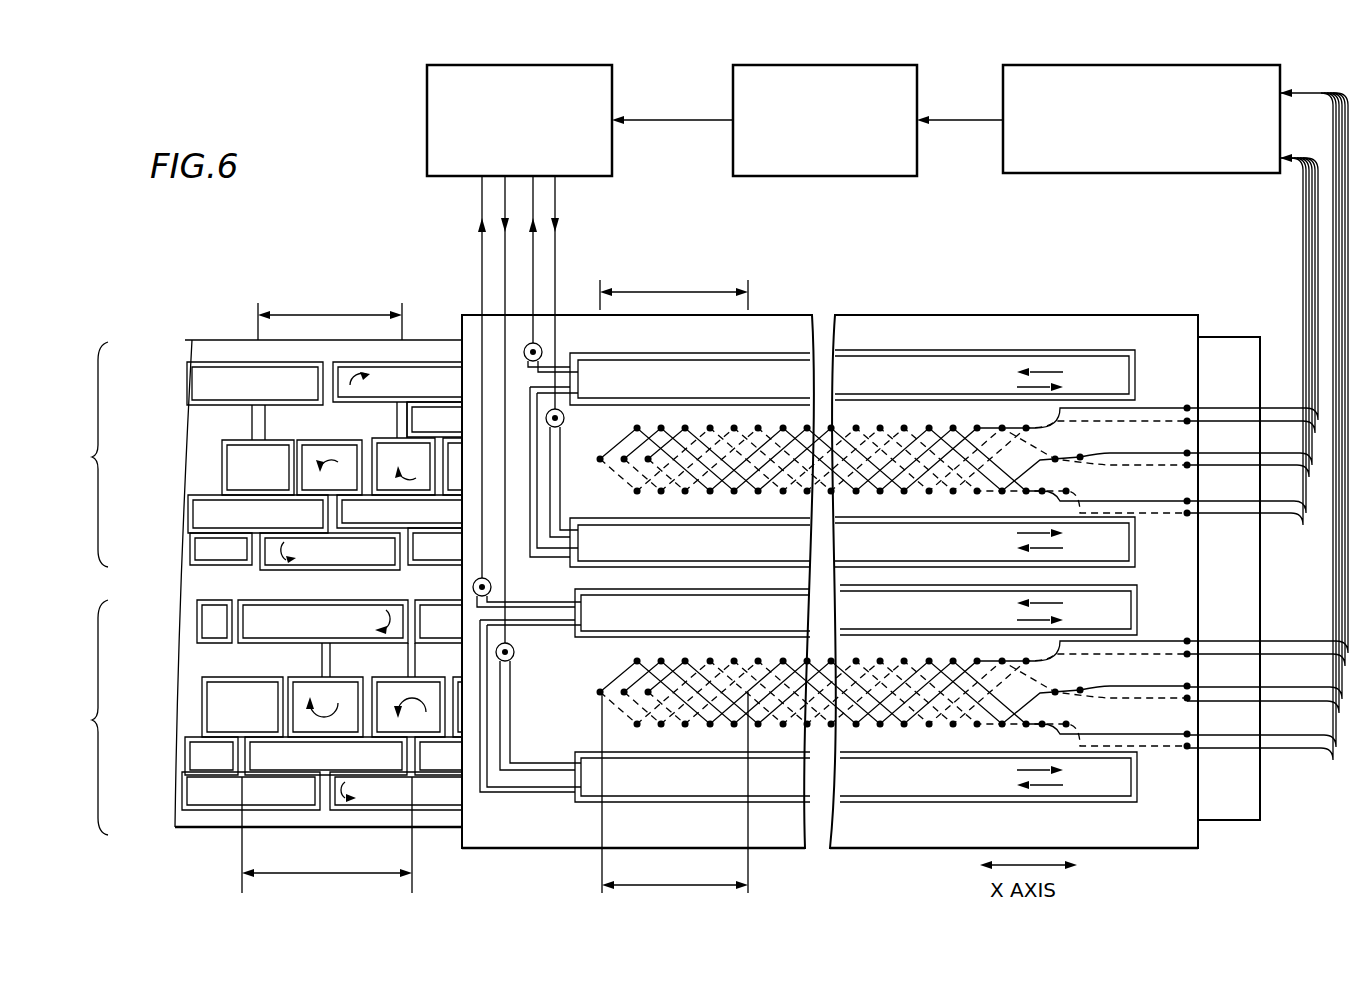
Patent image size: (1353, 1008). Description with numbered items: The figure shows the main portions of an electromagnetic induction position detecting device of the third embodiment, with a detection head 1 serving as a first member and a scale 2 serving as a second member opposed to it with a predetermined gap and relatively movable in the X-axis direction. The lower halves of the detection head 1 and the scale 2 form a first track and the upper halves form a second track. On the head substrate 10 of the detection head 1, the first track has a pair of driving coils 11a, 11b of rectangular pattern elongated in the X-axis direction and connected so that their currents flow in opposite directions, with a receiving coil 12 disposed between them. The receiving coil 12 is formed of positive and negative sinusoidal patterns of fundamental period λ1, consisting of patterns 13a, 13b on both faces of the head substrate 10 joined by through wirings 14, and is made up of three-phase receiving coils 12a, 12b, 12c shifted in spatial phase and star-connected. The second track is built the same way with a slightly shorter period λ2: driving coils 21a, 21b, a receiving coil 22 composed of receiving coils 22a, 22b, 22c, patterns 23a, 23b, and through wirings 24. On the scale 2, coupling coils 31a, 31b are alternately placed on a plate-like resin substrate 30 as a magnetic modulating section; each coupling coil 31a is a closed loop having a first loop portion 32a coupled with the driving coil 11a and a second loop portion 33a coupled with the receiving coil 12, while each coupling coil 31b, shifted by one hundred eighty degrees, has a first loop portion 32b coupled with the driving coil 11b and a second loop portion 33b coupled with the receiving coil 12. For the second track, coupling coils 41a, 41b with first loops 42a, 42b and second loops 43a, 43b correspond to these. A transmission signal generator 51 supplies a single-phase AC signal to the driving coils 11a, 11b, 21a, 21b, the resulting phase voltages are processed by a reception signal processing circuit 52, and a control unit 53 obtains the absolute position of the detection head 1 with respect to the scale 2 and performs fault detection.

The detection head 1 is at (976, 334).
The scale 2 is at (221, 333).
The head substrate 10 is at (1165, 314).
The driving coil 11a is at (583, 640).
The driving coil 11b is at (583, 803).
The receiving coil 12 is at (901, 740).
The receiving coil 12a is at (612, 678).
The receiving coil 12b is at (648, 668).
The receiving coil 12c is at (678, 663).
The pattern 13a is at (895, 662).
The pattern 13b is at (868, 730).
The through wirings 14 is at (973, 727).
The driving coil 21a is at (575, 350).
The driving coil 21b is at (568, 557).
The receiving coil 22 is at (847, 416).
The receiving coil 22a is at (612, 445).
The receiving coil 22b is at (648, 435).
The receiving coil 22c is at (678, 430).
The pattern 23a is at (895, 425).
The pattern 23b is at (892, 486).
The through wirings 24 is at (973, 490).
The resin substrate 30 is at (205, 822).
The coupling coil 31a is at (305, 658).
The coupling coil 31b is at (195, 709).
The first loop portion 32a is at (243, 620).
The first loop portion 32b is at (217, 777).
The second loop portion 33a is at (293, 702).
The second loop portion 33b is at (202, 718).
The coupling coil 41a is at (180, 382).
The coupling coil 41b is at (305, 506).
The first loop 42a is at (210, 362).
The first loop 42b is at (263, 548).
The second loop 43a is at (222, 458).
The second loop 43b is at (300, 470).
The transmission signal generator 51 is at (602, 178).
The reception signal processing circuit 52 is at (1108, 175).
The control unit 53 is at (890, 178).